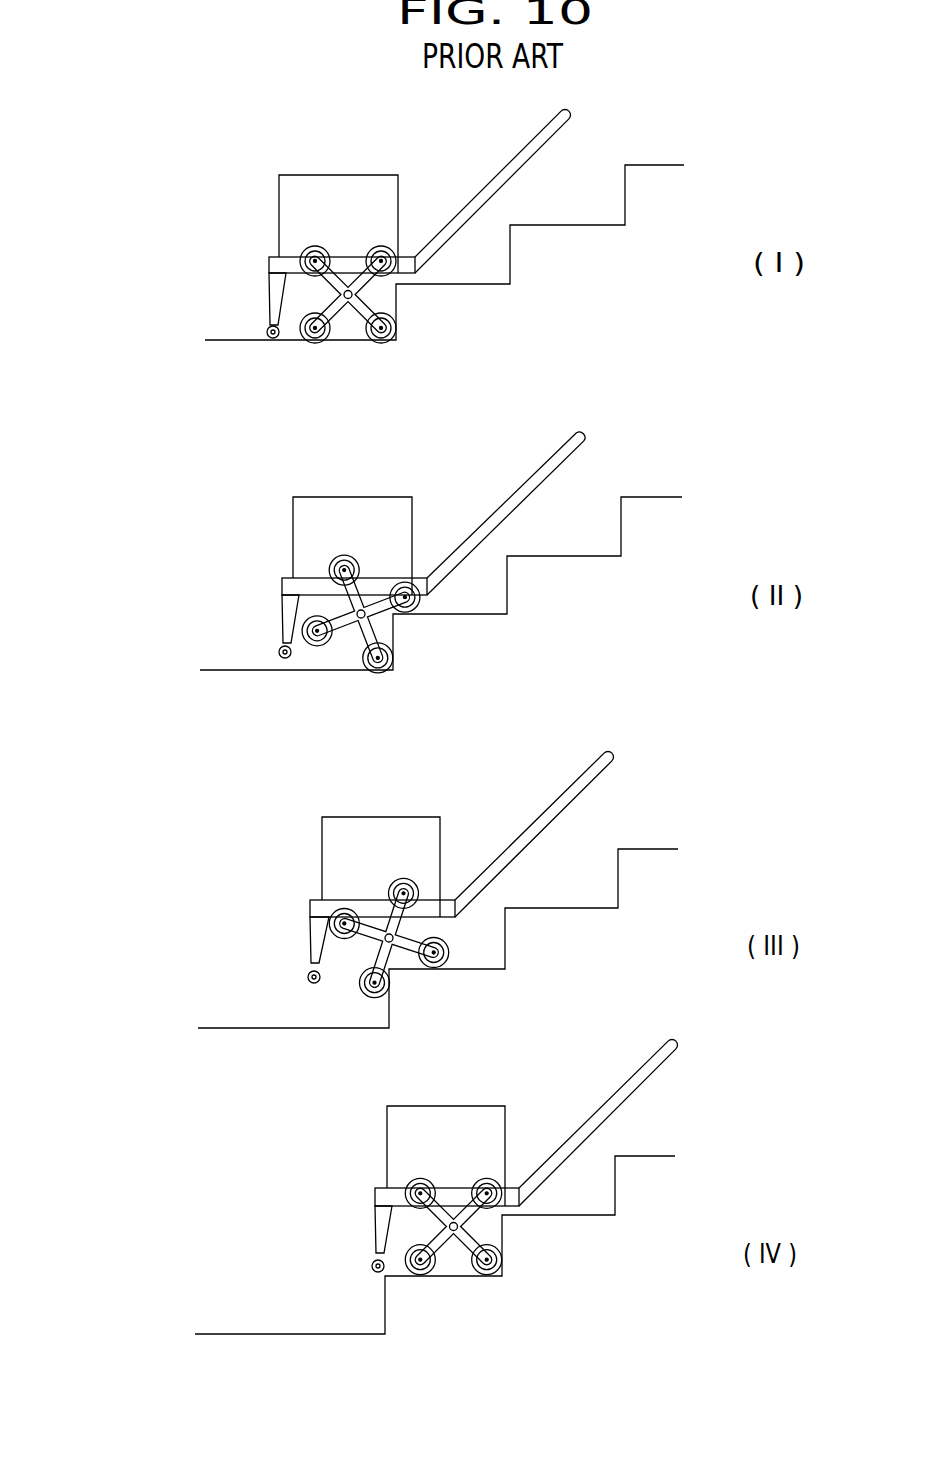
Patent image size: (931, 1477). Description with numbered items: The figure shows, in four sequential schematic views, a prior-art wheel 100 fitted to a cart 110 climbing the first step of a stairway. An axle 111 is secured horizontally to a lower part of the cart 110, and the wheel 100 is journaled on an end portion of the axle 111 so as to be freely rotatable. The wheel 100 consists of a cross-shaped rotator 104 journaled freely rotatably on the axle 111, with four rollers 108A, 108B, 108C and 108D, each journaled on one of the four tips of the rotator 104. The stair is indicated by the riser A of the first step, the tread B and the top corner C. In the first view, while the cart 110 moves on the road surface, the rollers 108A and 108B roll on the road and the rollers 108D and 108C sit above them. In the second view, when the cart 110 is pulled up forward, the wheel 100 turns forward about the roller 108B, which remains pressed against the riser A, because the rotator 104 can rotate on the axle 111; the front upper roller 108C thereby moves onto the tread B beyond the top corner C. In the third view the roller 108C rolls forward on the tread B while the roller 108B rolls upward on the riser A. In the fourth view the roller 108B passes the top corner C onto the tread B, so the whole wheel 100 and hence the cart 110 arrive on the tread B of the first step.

The wheel 100 is at (307, 350).
The cross-shaped rotator 104 is at (362, 316).
The roller 108A is at (307, 313).
The roller 108B is at (385, 341).
The roller 108C is at (386, 250).
The roller 108D is at (310, 252).
The cart 110 is at (265, 212).
The axle 111 is at (350, 318).
The riser A is at (397, 316).
The tread B is at (497, 285).
The top corner C is at (397, 285).